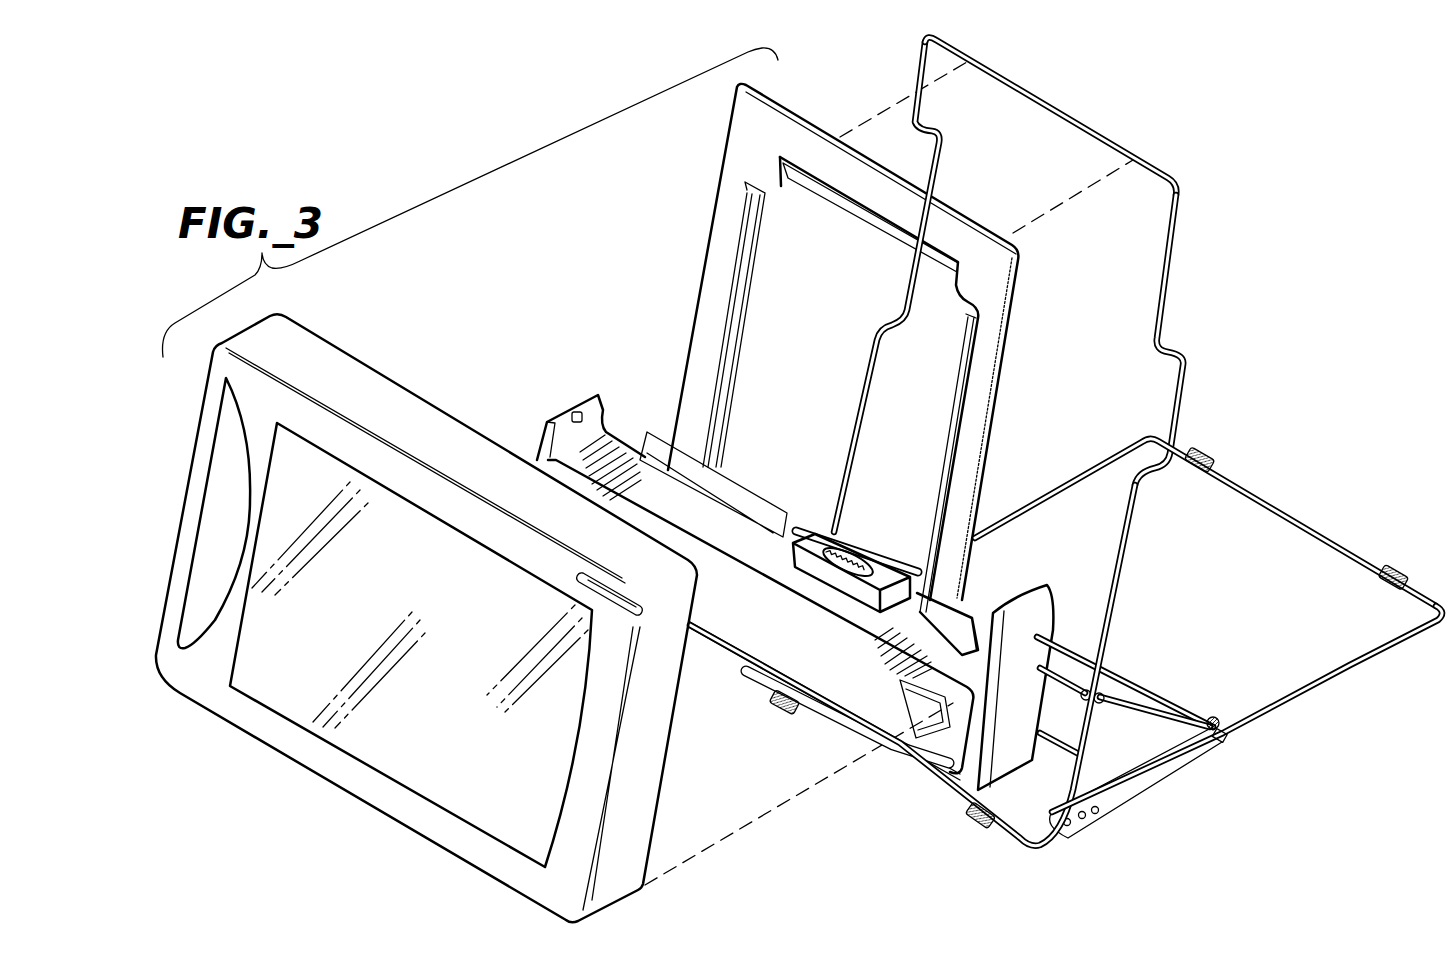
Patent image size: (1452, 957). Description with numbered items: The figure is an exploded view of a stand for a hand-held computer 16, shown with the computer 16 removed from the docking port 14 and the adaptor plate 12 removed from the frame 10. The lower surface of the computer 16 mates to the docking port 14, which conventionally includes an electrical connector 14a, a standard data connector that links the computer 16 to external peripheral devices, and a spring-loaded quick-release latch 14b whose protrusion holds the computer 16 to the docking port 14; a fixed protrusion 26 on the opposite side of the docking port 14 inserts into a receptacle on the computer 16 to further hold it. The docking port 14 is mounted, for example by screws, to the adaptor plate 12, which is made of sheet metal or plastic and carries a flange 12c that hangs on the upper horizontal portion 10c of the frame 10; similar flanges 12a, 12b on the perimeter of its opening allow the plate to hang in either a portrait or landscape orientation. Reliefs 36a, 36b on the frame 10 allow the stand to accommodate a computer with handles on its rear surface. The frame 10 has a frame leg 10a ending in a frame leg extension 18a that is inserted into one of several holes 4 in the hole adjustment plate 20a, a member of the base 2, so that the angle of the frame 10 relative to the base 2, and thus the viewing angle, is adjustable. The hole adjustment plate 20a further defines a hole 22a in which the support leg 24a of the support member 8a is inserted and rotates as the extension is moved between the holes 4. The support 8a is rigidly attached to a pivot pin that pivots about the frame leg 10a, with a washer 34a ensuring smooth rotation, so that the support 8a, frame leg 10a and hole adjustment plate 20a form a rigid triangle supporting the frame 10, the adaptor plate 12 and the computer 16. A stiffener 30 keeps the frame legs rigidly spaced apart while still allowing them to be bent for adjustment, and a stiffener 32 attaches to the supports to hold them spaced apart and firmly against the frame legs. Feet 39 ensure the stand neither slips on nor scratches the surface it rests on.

The base 2 is at (830, 725).
The holes 4 is at (1098, 814).
The support member 8a is at (1160, 700).
The frame 10 is at (1049, 284).
The frame leg 10a is at (1066, 642).
The upper horizontal portion 10c is at (1055, 105).
The adaptor plate 12 is at (843, 342).
The flange 12a is at (950, 425).
The flange 12b is at (728, 383).
The flange 12c is at (892, 237).
The docking port 14 is at (1027, 673).
The electrical connector 14a is at (853, 577).
The release latch 14b is at (933, 733).
The hand-held computer 16 is at (455, 837).
The frame leg extension 18a is at (1127, 793).
The hole adjustment plate 20a is at (1183, 757).
The hole 22a is at (1225, 715).
The support leg 24a is at (1230, 745).
The fixed protrusion 26 is at (575, 393).
The stiffener 30 is at (1067, 760).
The stiffener 32 is at (1118, 670).
The washer 34a is at (1100, 704).
The relief 36a is at (1178, 398).
The relief 36b is at (947, 172).
The feet 39 is at (1203, 453).